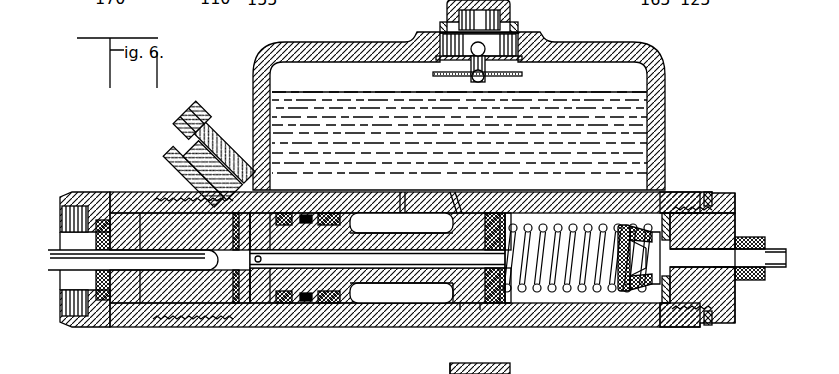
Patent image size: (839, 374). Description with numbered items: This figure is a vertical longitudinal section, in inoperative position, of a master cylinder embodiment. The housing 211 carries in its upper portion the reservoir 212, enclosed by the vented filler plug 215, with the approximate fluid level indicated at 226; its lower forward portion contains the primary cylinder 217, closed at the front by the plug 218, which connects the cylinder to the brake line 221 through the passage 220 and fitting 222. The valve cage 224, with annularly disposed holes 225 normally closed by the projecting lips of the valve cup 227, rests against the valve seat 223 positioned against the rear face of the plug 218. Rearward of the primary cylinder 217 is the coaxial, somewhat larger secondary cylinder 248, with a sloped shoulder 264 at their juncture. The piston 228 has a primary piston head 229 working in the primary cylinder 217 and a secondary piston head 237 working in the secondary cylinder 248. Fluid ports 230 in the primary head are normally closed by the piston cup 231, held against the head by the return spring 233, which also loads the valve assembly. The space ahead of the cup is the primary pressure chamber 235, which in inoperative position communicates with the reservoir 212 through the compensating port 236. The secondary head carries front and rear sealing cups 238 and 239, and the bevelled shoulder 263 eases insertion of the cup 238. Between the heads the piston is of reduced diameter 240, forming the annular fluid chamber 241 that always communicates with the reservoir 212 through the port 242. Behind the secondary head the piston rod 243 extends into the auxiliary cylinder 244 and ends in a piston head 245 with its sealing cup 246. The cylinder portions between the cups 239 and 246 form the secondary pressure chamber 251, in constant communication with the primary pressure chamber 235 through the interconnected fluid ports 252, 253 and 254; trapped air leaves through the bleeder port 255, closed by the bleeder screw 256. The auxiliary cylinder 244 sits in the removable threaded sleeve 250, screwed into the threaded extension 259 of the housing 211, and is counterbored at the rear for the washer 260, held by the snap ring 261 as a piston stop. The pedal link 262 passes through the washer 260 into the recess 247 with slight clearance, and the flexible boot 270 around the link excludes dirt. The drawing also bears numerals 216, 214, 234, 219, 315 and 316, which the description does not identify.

The housing 211 is at (665, 126).
The reservoir 212 is at (632, 113).
The fluid level 226 is at (345, 92).
The filler cap 216 is at (447, 17).
The vented filler plug 215 is at (519, 26).
The baffle plate 214 is at (522, 75).
The bleeder screw 256 is at (204, 125).
The threaded extension 259 is at (183, 187).
The bleeder port 255 is at (276, 183).
The port 242 is at (458, 190).
The secondary cylinder 248 is at (410, 213).
The threaded sleeve 250 is at (137, 190).
The snap ring 261 is at (100, 234).
The washer 260 is at (96, 297).
The pedal link 262 is at (96, 292).
The flexible boot 270 is at (74, 330).
The recess 247 is at (57, 261).
The sealing cup 246 is at (140, 315).
The piston head 245 is at (134, 320).
The auxiliary cylinder 244 is at (204, 300).
The shoulder 263 is at (238, 307).
The fluid port 253 is at (252, 328).
The piston rod 243 is at (236, 303).
The annular fluid chamber 241 is at (401, 223).
The fluid port 252 is at (427, 262).
The reduced diameter portion 240 is at (401, 294).
The piston 228 is at (401, 294).
The rear sealing cup 239 is at (285, 213).
The secondary piston head 237 is at (310, 213).
The front sealing cup 238 is at (338, 213).
The secondary pressure chamber 251 is at (272, 310).
The fluid port 254 is at (262, 260).
The cup seal 234 is at (492, 213).
The compensating port 236 is at (510, 213).
The primary pressure chamber 235 is at (548, 213).
The sloped shoulder 264 is at (455, 295).
The primary piston head 229 is at (462, 310).
The fluid ports 230 is at (484, 310).
The piston cup 231 is at (508, 313).
The primary cylinder 217 is at (600, 213).
The return spring 233 is at (608, 286).
The valve cup 227 is at (630, 292).
The passage 220 is at (698, 258).
The seal ring 219 is at (710, 190).
The valve seat 223 is at (708, 312).
The plug 218 is at (733, 197).
The fitting 222 is at (756, 281).
The brake line 221 is at (768, 258).
The valve cage 224 is at (648, 318).
The holes 225 is at (640, 300).
The bracket 315 is at (511, 368).
The bracket plate 316 is at (434, 368).